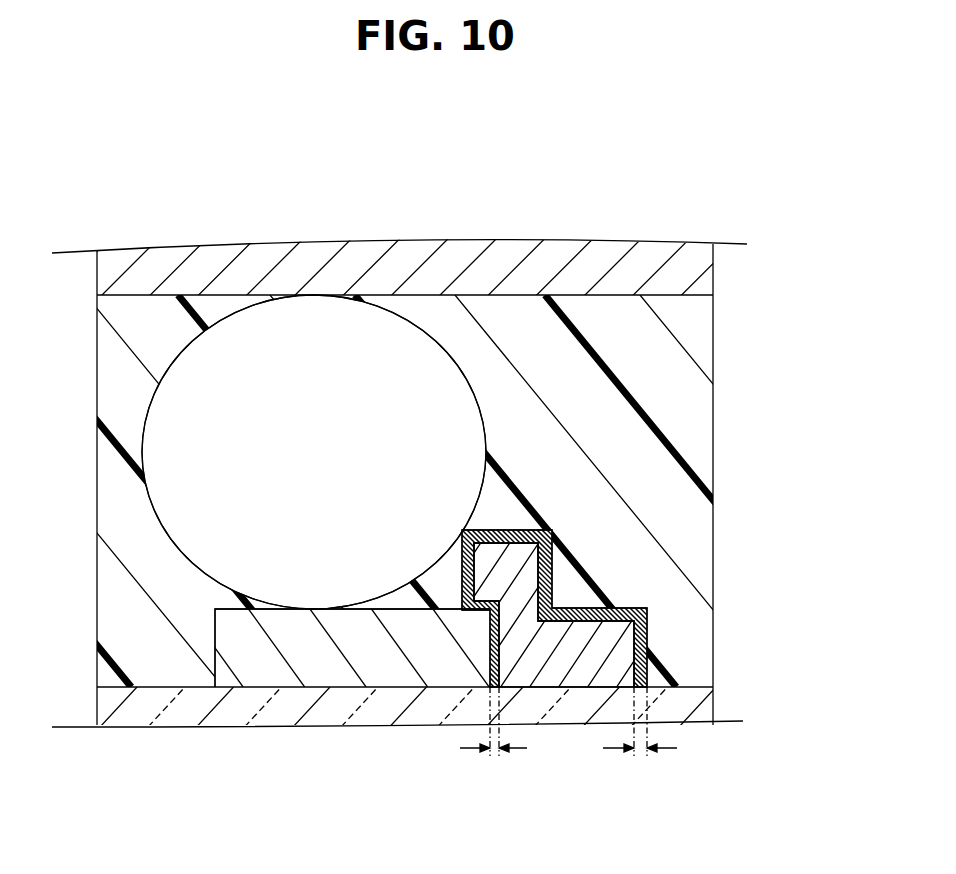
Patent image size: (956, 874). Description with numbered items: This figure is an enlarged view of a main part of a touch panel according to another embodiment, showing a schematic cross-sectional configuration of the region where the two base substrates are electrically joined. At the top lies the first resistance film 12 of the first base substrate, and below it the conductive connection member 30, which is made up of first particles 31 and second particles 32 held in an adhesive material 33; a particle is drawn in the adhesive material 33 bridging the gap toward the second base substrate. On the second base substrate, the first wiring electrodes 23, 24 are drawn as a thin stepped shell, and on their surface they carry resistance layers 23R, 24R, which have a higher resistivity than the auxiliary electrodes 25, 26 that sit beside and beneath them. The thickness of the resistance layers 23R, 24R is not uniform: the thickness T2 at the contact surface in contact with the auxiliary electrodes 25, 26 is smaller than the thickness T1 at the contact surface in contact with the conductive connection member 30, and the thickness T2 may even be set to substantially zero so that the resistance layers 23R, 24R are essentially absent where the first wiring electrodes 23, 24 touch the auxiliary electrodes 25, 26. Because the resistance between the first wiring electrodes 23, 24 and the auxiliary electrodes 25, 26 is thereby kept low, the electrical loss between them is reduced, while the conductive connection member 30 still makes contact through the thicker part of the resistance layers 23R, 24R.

The first resistance film 12 is at (212, 258).
The conductive connection member 30 is at (565, 163).
The first particles 31 is at (330, 322).
The second particles 32 is at (330, 322).
The adhesive material 33 is at (492, 327).
The first wiring electrode 23 is at (631, 607).
The first wiring electrode 24 is at (631, 607).
The resistance layer 23R is at (477, 597).
The resistance layer 24R is at (477, 597).
The auxiliary electrode 25 is at (263, 670).
The auxiliary electrode 26 is at (263, 670).
The thickness T1 is at (677, 748).
The thickness T2 is at (527, 748).